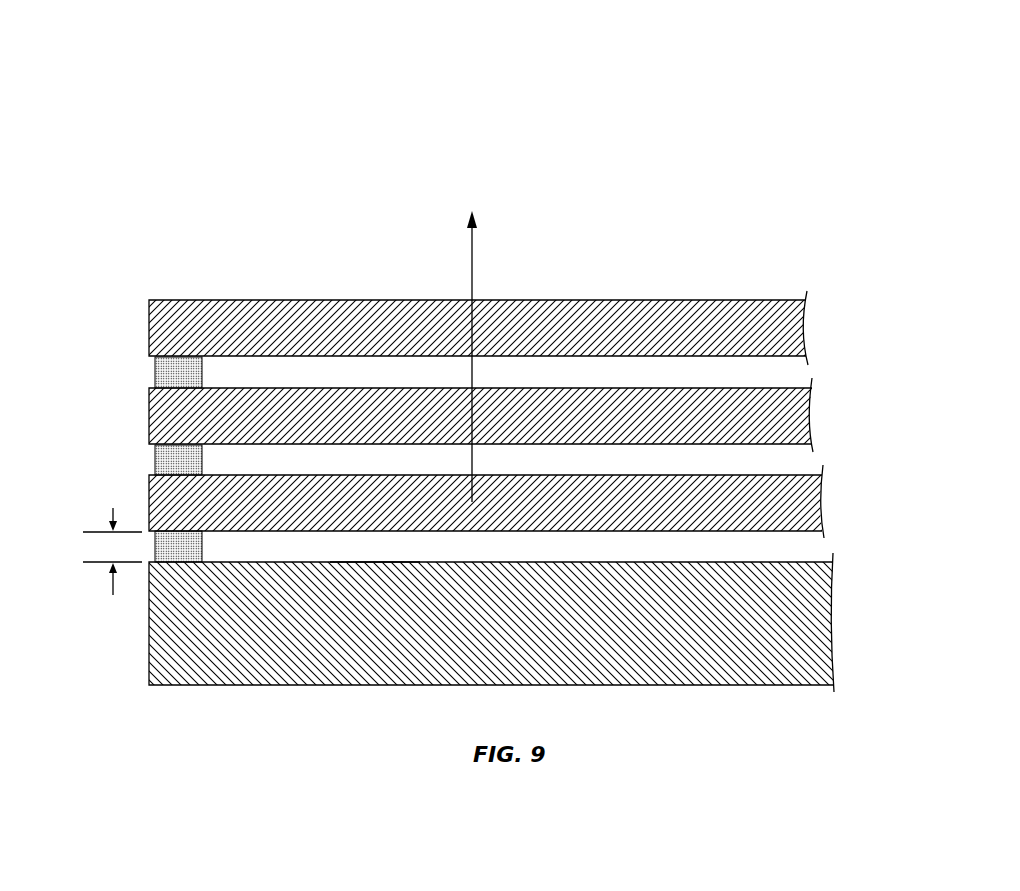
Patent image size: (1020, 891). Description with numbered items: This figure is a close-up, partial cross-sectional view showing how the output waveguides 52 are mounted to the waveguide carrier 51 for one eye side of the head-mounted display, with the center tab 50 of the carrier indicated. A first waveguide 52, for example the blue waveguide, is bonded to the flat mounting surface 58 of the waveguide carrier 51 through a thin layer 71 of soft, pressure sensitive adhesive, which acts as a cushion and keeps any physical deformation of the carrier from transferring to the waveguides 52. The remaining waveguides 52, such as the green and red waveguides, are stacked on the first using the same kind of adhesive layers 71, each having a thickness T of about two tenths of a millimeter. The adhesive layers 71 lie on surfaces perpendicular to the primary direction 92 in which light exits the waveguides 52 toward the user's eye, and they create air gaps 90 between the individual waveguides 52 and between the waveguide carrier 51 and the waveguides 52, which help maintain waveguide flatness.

The center tab 50 is at (480, 83).
The waveguide carrier 51 is at (149, 654).
The waveguides 52 is at (149, 336).
The adhesive layer 71 is at (202, 382).
The flat mounting surface 58 is at (373, 562).
The air gaps 90 is at (112, 565).
The primary direction 92 is at (472, 286).